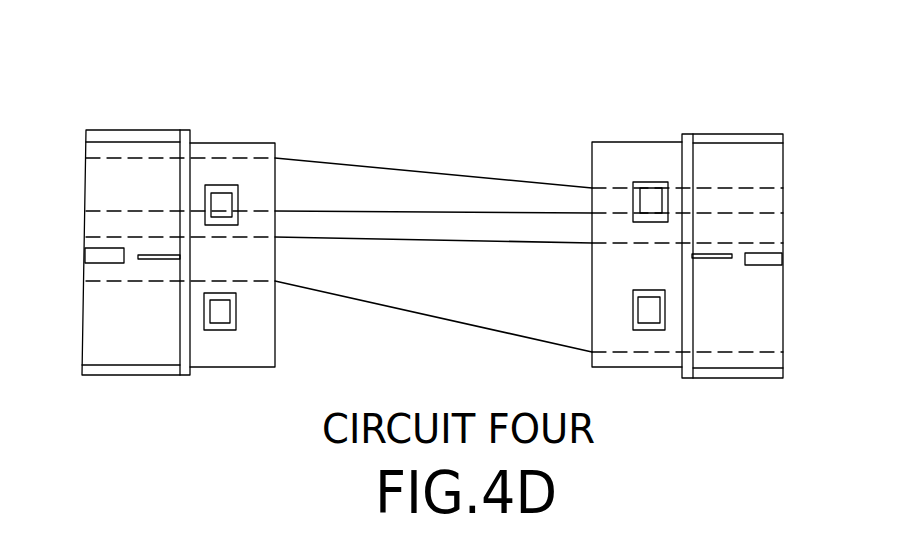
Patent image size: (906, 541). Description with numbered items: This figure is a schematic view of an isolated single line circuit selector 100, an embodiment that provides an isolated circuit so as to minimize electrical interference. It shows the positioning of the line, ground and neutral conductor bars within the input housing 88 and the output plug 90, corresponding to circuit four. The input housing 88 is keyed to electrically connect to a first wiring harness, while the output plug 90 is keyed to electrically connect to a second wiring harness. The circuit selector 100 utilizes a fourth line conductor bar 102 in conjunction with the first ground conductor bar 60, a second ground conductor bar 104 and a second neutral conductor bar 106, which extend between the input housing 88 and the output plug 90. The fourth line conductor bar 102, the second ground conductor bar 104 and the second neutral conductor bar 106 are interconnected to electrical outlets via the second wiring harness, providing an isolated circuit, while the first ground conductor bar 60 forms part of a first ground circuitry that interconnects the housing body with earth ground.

The isolated single line circuit selector 100 is at (430, 80).
The input housing 88 is at (133, 130).
The output plug 90 is at (743, 134).
The second neutral conductor bar 106 is at (433, 175).
The second ground conductor bar 104 is at (423, 210).
The first ground conductor bar 60 is at (425, 238).
The fourth line conductor bar 102 is at (440, 317).